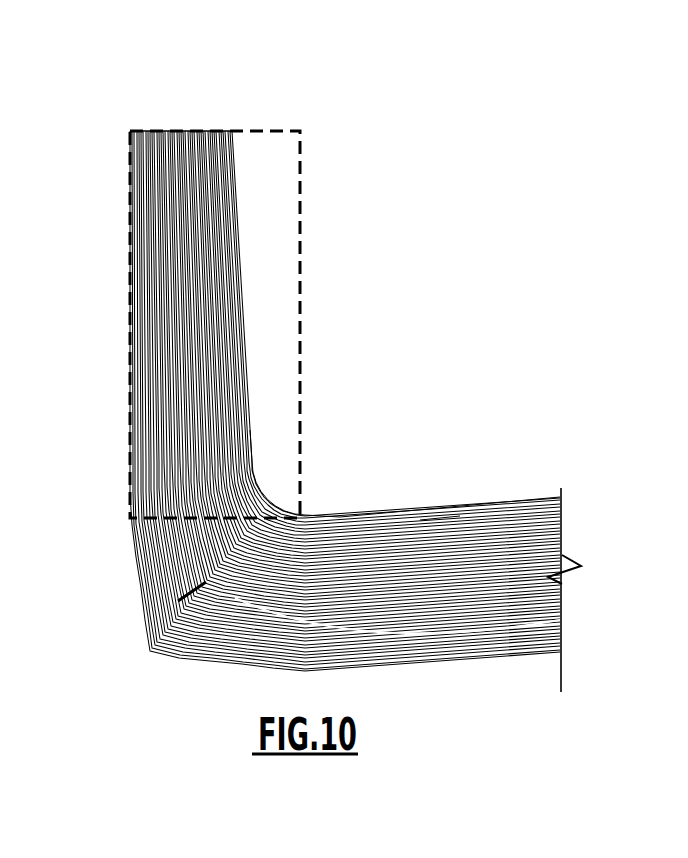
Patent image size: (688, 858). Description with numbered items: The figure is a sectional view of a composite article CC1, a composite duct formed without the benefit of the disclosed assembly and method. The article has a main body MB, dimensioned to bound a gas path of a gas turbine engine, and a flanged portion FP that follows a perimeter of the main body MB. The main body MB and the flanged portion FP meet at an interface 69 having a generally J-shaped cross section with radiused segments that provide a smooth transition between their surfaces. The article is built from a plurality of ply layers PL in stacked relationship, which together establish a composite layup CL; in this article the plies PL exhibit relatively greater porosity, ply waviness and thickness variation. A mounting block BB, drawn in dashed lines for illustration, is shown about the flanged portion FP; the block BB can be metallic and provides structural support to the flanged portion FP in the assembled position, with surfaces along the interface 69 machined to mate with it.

The composite article CC1 is at (134, 92).
The mounting block BB is at (300, 170).
The flanged portion FP is at (180, 131).
The interface 69 is at (275, 494).
The ply layers PL is at (446, 546).
The composite layup CL is at (496, 494).
The main body MB is at (540, 498).